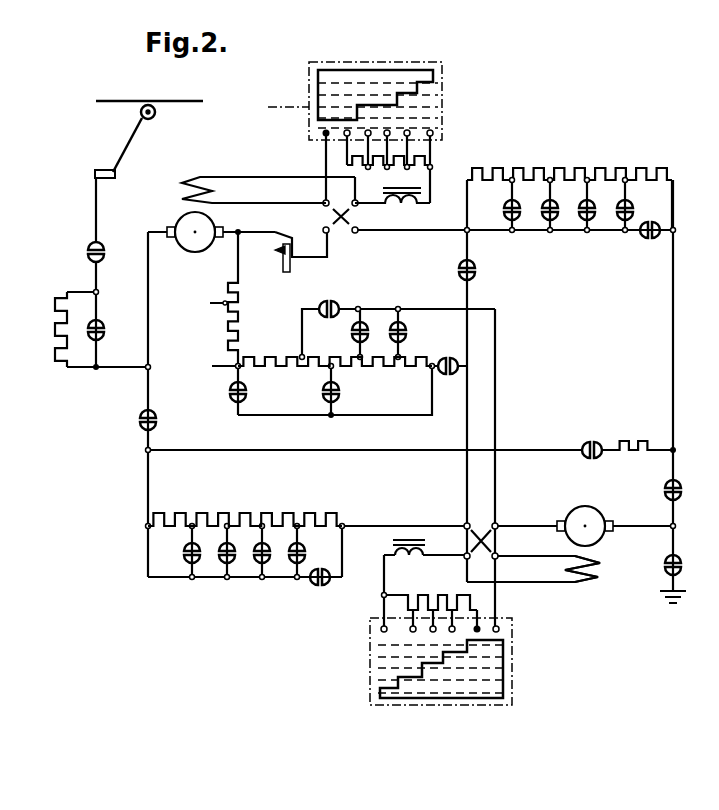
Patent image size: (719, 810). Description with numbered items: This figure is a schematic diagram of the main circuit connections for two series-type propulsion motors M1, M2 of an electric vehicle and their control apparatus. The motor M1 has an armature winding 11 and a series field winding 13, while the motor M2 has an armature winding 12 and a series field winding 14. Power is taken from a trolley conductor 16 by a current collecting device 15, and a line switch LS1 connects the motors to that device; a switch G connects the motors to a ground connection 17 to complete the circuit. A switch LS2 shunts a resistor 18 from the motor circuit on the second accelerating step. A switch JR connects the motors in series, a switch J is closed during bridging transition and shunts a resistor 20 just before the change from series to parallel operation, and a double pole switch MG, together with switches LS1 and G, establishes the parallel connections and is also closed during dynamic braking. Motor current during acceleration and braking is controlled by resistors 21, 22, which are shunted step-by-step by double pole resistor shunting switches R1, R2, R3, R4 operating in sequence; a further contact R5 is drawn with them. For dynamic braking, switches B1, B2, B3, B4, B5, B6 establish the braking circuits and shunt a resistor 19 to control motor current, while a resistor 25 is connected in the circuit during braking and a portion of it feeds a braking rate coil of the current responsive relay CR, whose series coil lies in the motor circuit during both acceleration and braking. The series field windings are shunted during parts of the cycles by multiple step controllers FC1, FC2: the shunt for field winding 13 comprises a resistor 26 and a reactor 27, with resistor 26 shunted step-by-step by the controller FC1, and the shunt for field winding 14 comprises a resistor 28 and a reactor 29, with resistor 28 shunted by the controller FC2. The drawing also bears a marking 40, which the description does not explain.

The armature winding 11 is at (178, 219).
The armature winding 12 is at (576, 506).
The series field winding 13 is at (200, 176).
The series field winding 14 is at (598, 580).
The current collecting device 15 is at (126, 147).
The trolley conductor 16 is at (175, 103).
The ground connection 17 is at (663, 596).
The resistor 18 is at (55, 326).
The resistor 19 is at (308, 372).
The resistor 20 is at (647, 440).
The resistor 21 is at (578, 168).
The resistor 22 is at (242, 512).
The resistor 25 is at (240, 334).
The resistor 26 is at (433, 158).
The reactor 27 is at (415, 208).
The resistor 28 is at (443, 594).
The reactor 29 is at (384, 578).
The reference 40 is at (716, 768).
The multiple step controller FC1 is at (393, 55).
The multiple step controller FC2 is at (452, 728).
The motor M1 is at (200, 284).
The motor M2 is at (626, 504).
The current responsive relay CR is at (322, 254).
The switch J is at (483, 286).
The switch JR is at (603, 441).
The double pole switch MG is at (153, 421).
The switch G is at (680, 566).
The line switch LS1 is at (102, 260).
The switch LS2 is at (102, 345).
The switch B1 is at (435, 360).
The switch B2 is at (407, 327).
The switch B3 is at (350, 328).
The switch B4 is at (340, 397).
The switch B5 is at (329, 301).
The switch B6 is at (229, 395).
The resistor shunting switch R1 is at (507, 233).
The resistor shunting switch R2 is at (546, 233).
The resistor shunting switch R3 is at (583, 233).
The resistor shunting switch R4 is at (620, 233).
The contact R5 is at (645, 239).